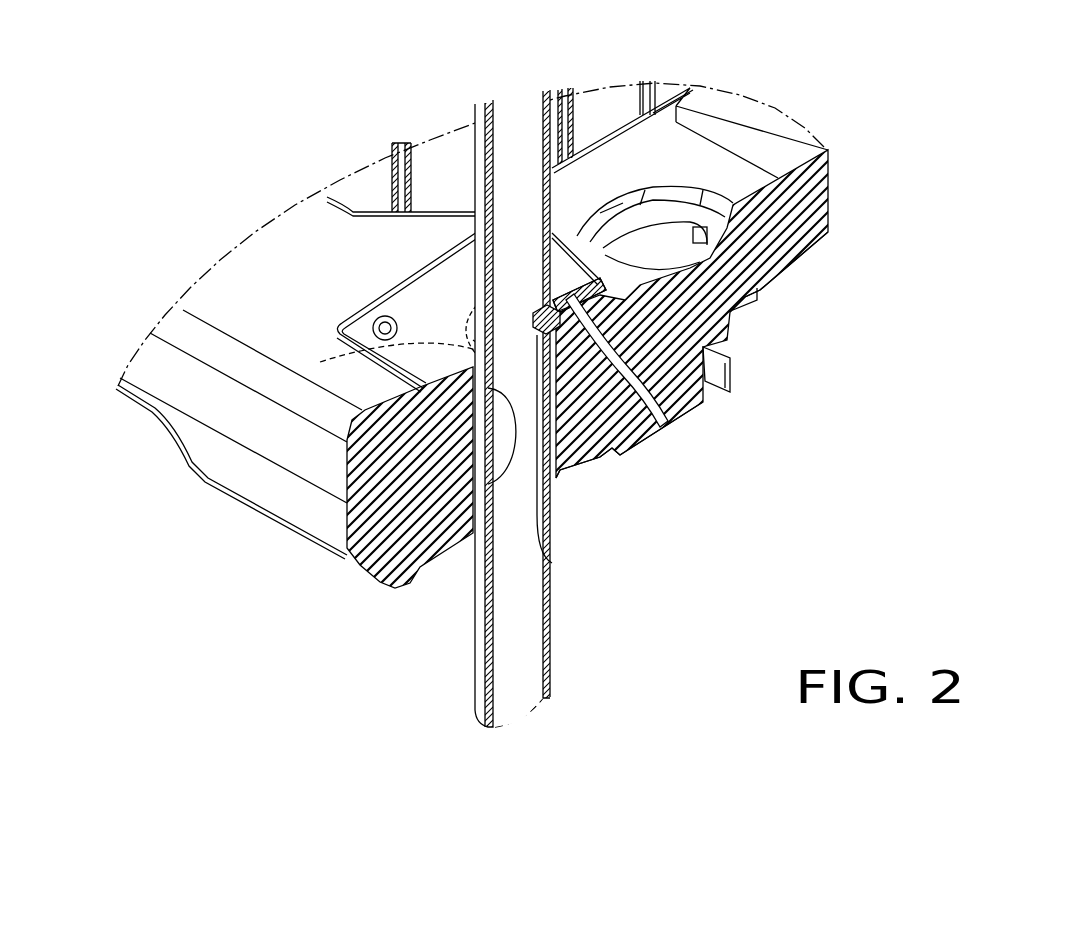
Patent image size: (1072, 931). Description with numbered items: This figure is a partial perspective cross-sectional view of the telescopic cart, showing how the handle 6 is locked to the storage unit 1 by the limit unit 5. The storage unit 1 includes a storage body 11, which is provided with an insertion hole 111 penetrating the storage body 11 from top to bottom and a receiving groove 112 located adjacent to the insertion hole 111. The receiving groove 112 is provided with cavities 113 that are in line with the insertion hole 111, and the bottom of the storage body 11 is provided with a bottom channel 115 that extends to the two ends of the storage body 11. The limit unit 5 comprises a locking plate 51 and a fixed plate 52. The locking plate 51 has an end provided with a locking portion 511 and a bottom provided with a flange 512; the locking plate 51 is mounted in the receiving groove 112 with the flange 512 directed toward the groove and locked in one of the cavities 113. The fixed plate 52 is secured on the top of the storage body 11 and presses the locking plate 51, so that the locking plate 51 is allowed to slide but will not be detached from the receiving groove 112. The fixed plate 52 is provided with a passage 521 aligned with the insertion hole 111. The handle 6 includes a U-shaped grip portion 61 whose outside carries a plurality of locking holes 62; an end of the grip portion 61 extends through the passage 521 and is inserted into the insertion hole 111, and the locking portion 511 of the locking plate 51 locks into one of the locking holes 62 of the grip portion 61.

The storage unit 1 is at (955, 196).
The limit unit 5 is at (183, 112).
The handle 6 is at (338, 686).
The storage body 11 is at (830, 205).
The locking plate 51 is at (668, 222).
The fixed plate 52 is at (440, 282).
The grip portion 61 is at (478, 652).
The locking hole 62 is at (535, 318).
The insertion hole 111 is at (340, 550).
The receiving groove 112 is at (730, 380).
The cavity 113 is at (670, 427).
The bottom channel 115 is at (770, 309).
The locking portion 511 is at (548, 562).
The flange 512 is at (633, 437).
The passage 521 is at (478, 345).